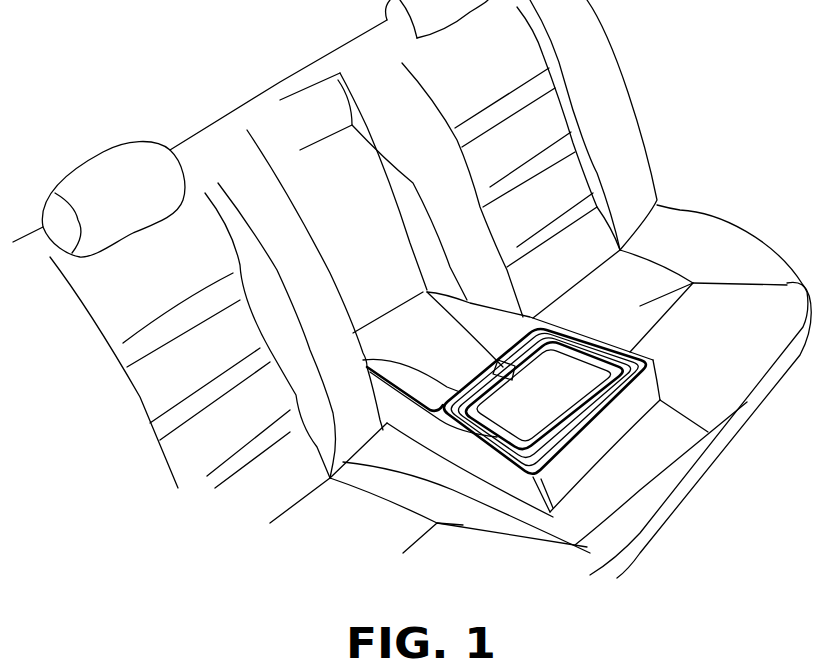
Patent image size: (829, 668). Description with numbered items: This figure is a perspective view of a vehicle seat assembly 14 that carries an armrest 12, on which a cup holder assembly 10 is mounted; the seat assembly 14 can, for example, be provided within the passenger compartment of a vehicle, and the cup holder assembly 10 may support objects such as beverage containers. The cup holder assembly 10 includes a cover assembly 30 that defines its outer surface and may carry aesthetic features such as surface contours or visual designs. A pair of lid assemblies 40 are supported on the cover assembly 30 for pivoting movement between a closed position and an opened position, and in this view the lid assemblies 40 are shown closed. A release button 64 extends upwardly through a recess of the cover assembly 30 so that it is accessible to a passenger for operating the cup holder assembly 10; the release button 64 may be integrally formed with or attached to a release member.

The cup holder assembly 10 is at (495, 415).
The armrest 12 is at (607, 440).
The seat assembly 14 is at (613, 97).
The cover assembly 30 is at (378, 383).
The lid assemblies 40 is at (523, 427).
The release button 64 is at (423, 292).